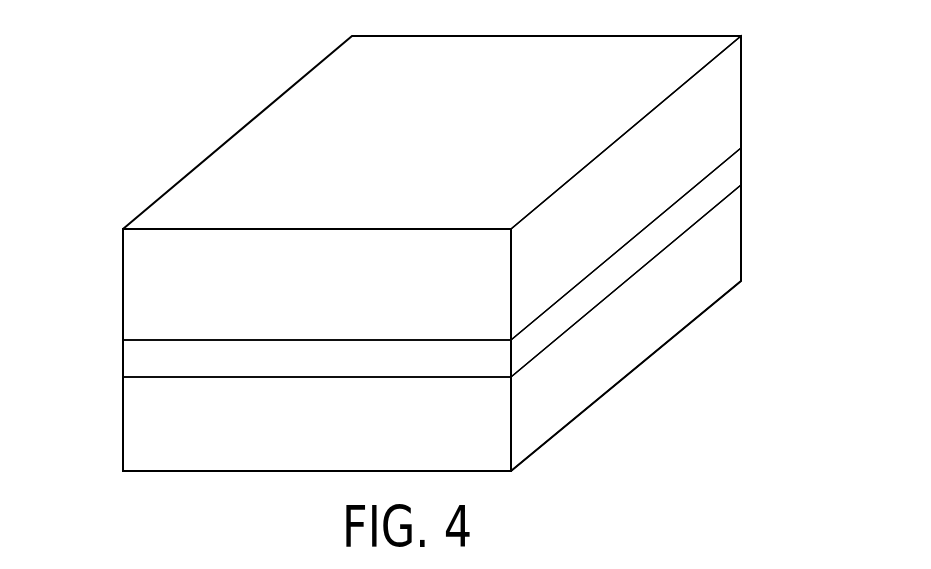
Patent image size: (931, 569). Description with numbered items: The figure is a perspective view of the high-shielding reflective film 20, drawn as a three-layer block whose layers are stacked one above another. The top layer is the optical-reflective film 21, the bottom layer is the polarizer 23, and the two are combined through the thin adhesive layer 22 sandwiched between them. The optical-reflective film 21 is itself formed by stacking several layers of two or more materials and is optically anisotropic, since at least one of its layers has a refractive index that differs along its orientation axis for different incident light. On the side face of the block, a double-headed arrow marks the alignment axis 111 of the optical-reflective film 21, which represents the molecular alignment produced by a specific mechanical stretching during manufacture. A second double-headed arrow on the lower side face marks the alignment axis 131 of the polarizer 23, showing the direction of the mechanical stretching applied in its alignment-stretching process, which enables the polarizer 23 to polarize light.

The high-shielding reflective film 20 is at (120, 231).
The optical-reflective film 21 is at (332, 300).
The adhesive layer 22 is at (332, 372).
The polarizer 23 is at (332, 437).
The alignment axis of the optical-reflective film 111 is at (573, 232).
The alignment axis of the polarizer 131 is at (573, 372).